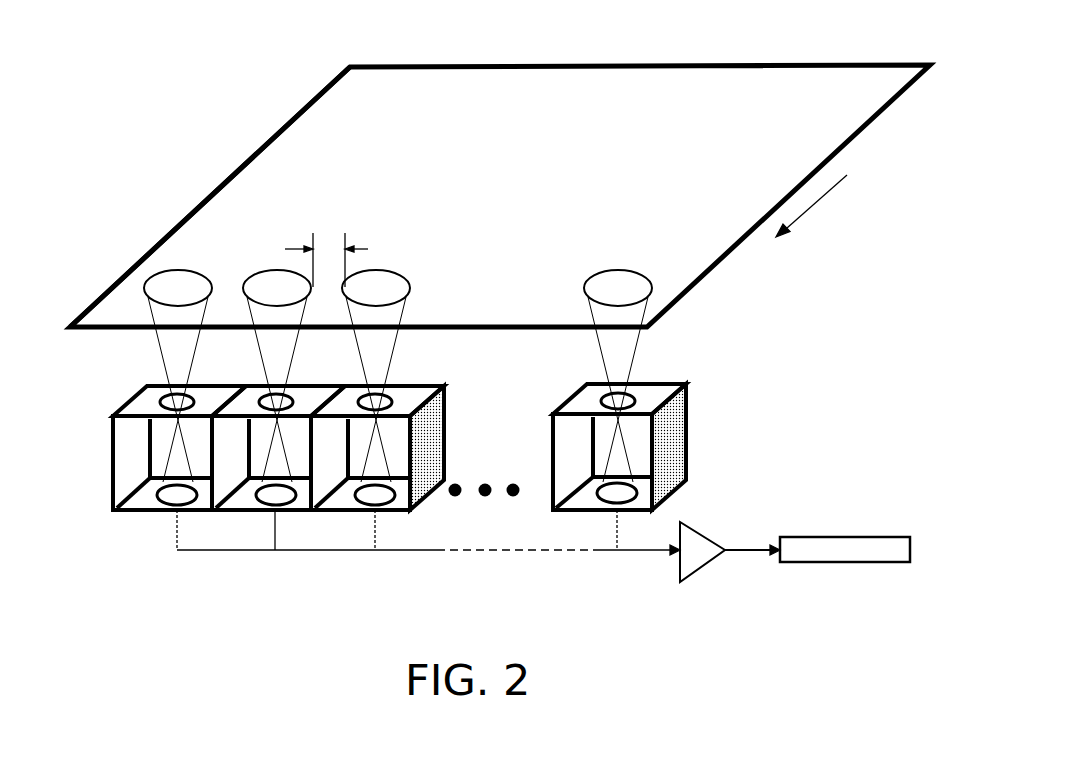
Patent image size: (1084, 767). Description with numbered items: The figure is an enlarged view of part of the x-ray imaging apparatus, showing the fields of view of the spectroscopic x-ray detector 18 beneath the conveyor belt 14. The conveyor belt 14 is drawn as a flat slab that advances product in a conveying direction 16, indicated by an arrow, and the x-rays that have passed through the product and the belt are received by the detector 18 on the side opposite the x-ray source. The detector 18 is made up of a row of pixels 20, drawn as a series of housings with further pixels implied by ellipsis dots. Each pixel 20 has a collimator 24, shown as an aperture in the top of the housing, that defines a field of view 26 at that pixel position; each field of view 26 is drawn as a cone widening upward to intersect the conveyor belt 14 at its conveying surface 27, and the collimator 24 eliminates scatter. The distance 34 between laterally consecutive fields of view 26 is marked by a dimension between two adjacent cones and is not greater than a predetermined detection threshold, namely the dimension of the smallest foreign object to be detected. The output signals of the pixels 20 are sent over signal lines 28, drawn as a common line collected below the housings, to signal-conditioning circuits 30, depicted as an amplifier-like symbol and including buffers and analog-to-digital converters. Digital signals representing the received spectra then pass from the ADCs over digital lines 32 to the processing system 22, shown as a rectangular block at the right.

The conveyor belt 14 is at (260, 147).
The conveying surface 27 is at (197, 227).
The conveying direction 16 is at (821, 197).
The distance 34 is at (287, 249).
The field of view 26 is at (650, 283).
The spectroscopic x-ray detector 18 is at (113, 460).
The pixel 20 is at (645, 433).
The collimator 24 is at (627, 398).
The signal lines 28 is at (308, 550).
The signal-conditioning circuits 30 is at (698, 560).
The digital lines 32 is at (743, 548).
The processing system 22 is at (827, 562).